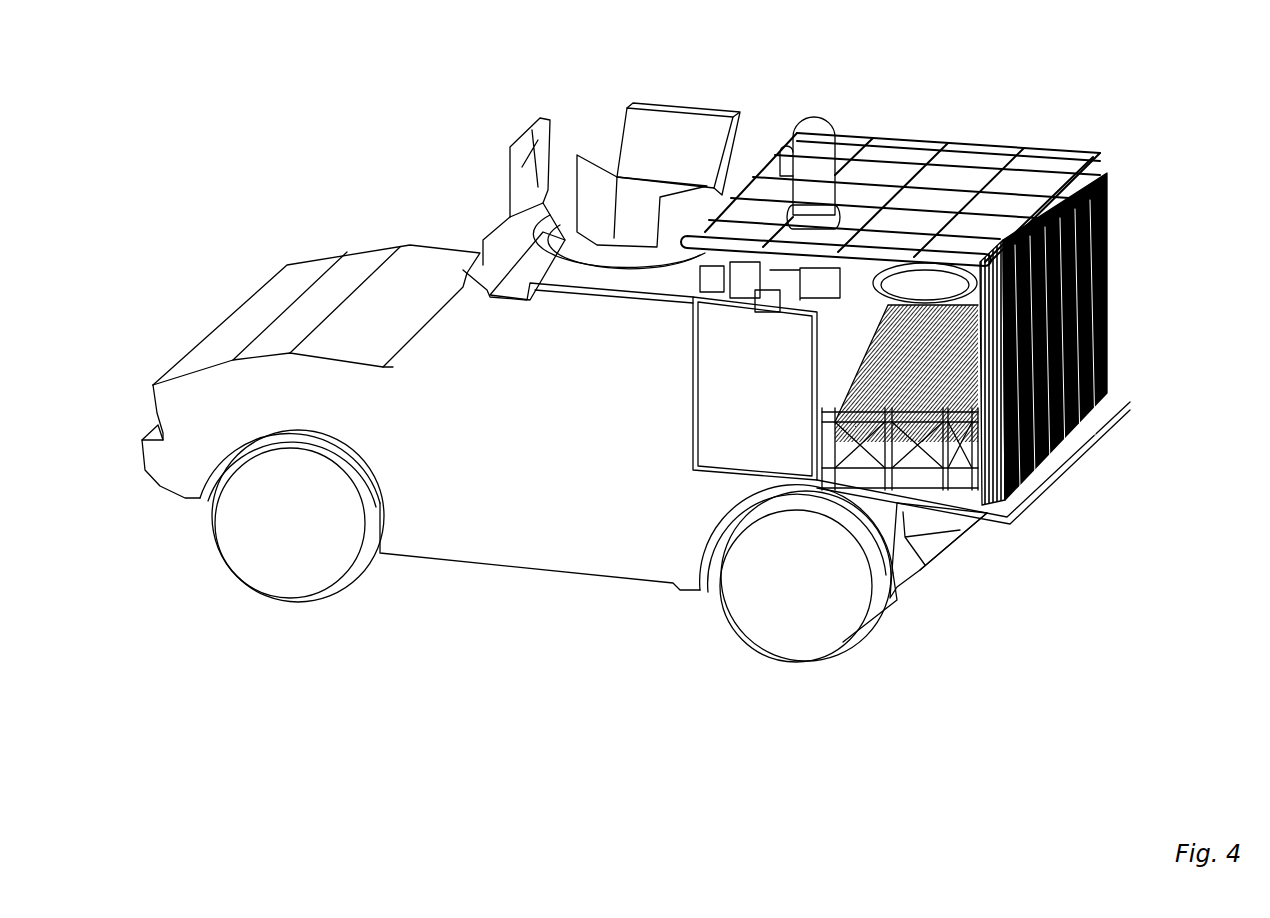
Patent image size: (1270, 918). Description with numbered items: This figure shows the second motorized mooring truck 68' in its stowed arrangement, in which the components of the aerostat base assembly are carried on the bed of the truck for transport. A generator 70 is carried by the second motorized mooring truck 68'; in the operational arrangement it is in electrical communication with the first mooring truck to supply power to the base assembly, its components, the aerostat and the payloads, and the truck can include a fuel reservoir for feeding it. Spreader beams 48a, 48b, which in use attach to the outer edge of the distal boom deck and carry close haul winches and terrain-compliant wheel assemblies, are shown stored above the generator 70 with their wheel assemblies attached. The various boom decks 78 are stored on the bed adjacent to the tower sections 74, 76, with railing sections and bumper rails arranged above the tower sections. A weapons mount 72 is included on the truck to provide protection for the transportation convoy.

The second motorized mooring truck 68' is at (636, 389).
The weapons mount 72 is at (687, 113).
The spreader beam 48a is at (710, 288).
The spreader beam 48b is at (767, 305).
The generator 70 is at (717, 427).
The tower section 76 is at (850, 372).
The tower section 74 is at (850, 447).
The boom decks 78 is at (1110, 345).